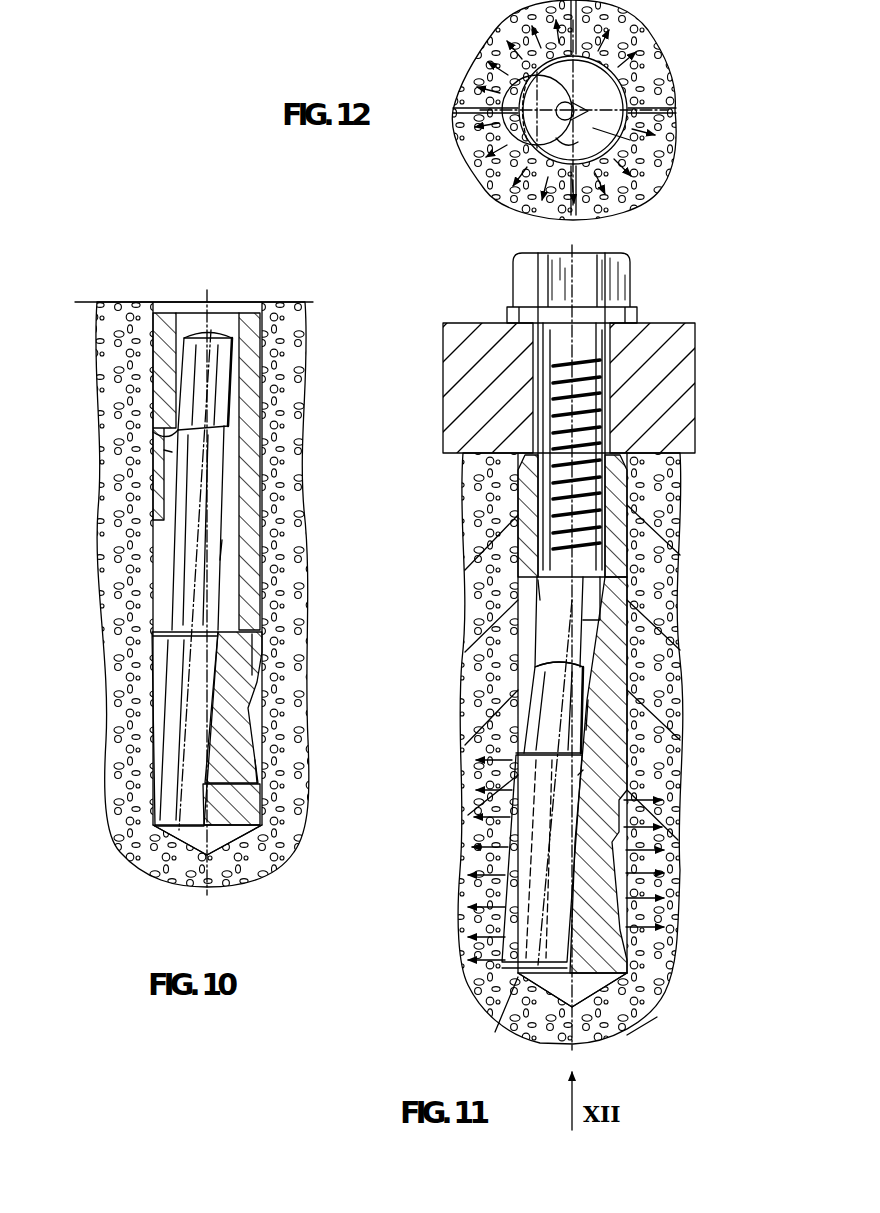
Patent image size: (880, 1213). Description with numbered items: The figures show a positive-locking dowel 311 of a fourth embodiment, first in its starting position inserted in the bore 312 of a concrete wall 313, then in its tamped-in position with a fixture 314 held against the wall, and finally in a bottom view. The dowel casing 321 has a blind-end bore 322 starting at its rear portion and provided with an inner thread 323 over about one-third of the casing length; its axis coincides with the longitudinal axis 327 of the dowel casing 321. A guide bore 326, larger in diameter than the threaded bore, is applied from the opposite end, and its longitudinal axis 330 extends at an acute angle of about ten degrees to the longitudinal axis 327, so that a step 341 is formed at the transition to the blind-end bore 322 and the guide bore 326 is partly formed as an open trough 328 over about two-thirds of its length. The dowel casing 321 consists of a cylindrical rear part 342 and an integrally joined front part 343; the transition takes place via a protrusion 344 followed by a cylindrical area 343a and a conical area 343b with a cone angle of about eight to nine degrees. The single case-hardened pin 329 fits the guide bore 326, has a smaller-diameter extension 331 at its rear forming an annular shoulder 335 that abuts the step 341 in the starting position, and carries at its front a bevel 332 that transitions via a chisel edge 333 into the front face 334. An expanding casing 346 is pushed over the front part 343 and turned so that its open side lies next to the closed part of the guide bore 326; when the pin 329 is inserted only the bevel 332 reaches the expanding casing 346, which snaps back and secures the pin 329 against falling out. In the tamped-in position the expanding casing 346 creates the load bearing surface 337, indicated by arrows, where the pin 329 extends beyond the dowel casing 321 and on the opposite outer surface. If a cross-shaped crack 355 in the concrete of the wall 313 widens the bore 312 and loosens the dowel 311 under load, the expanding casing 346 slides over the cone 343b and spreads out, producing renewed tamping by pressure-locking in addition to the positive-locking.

In FIG. 12, the dowel 311 is at (520, 193).
In FIG. 10, the dowel 311 is at (185, 312).
In FIG. 11, the dowel 311 is at (590, 675).
In FIG. 10, the bore 312 is at (150, 810).
In FIG. 11, the bore 312 is at (632, 953).
In FIG. 12, the wall 313 is at (564, 110).
In FIG. 10, the wall 313 is at (130, 840).
In FIG. 11, the wall 313 is at (637, 1003).
In FIG. 11, the fixture plate 314 is at (478, 335).
In FIG. 12, the dowel casing 321 is at (600, 64).
In FIG. 10, the dowel casing 321 is at (165, 388).
In FIG. 11, the dowel casing 321 is at (527, 523).
In FIG. 10, the blind-end bore 322 is at (236, 410).
In FIG. 11, the blind-end bore 322 is at (612, 517).
In FIG. 10, the inner thread 323 is at (268, 362).
In FIG. 11, the inner thread 323 is at (636, 490).
In FIG. 10, the guide bore 326 is at (222, 550).
In FIG. 11, the guide bore 326 is at (590, 710).
In FIG. 12, the longitudinal axis 327 is at (575, 108).
In FIG. 10, the longitudinal axis 327 is at (215, 850).
In FIG. 11, the longitudinal axis 327 is at (575, 752).
In FIG. 12, the open trough 328 is at (585, 160).
In FIG. 10, the open trough 328 is at (262, 780).
In FIG. 11, the open trough 328 is at (585, 770).
In FIG. 10, the pin 329 is at (186, 489).
In FIG. 11, the pin 329 is at (530, 836).
In FIG. 12, the longitudinal axis 330 is at (482, 143).
In FIG. 10, the longitudinal axis 330 is at (180, 697).
In FIG. 11, the longitudinal axis 330 is at (540, 870).
In FIG. 10, the extension 331 is at (212, 335).
In FIG. 11, the extension 331 is at (577, 696).
In FIG. 10, the bevel 332 is at (150, 630).
In FIG. 11, the bevel 332 is at (493, 957).
In FIG. 10, the chisel edge 333 is at (152, 644).
In FIG. 11, the chisel edge 333 is at (507, 978).
In FIG. 10, the front face 334 is at (154, 660).
In FIG. 11, the front face 334 is at (520, 990).
In FIG. 10, the annular shoulder 335 is at (160, 418).
In FIG. 11, the annular shoulder 335 is at (518, 740).
In FIG. 12, the load bearing surface 337 is at (478, 82).
In FIG. 11, the load bearing surface 337 is at (488, 805).
In FIG. 10, the step 341 is at (172, 450).
In FIG. 11, the step 341 is at (540, 590).
In FIG. 10, the cylindrical rear part 342 is at (250, 460).
In FIG. 11, the cylindrical rear part 342 is at (622, 562).
In FIG. 10, the front part 343 is at (228, 722).
In FIG. 11, the front part 343 is at (592, 885).
In FIG. 10, the cylindrical area 343a is at (258, 657).
In FIG. 11, the cylindrical area 343a is at (622, 822).
In FIG. 10, the conical area 343b is at (250, 765).
In FIG. 11, the conical area 343b is at (616, 910).
In FIG. 10, the protrusion 344 is at (250, 640).
In FIG. 11, the protrusion 344 is at (622, 800).
In FIG. 12, the expanding casing 346 is at (630, 140).
In FIG. 10, the expanding casing 346 is at (256, 700).
In FIG. 11, the expanding casing 346 is at (624, 858).
In FIG. 12, the cross-shaped crack 355 is at (655, 110).